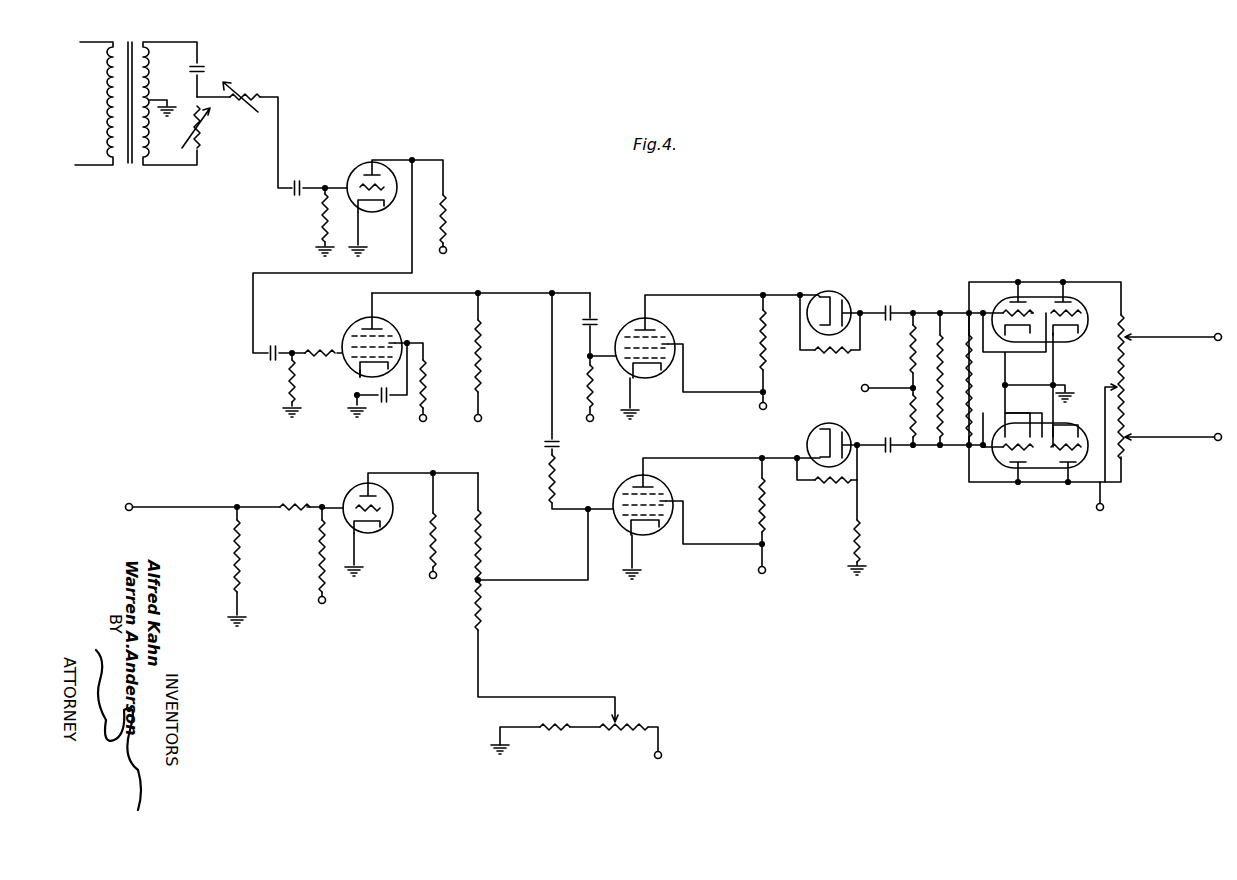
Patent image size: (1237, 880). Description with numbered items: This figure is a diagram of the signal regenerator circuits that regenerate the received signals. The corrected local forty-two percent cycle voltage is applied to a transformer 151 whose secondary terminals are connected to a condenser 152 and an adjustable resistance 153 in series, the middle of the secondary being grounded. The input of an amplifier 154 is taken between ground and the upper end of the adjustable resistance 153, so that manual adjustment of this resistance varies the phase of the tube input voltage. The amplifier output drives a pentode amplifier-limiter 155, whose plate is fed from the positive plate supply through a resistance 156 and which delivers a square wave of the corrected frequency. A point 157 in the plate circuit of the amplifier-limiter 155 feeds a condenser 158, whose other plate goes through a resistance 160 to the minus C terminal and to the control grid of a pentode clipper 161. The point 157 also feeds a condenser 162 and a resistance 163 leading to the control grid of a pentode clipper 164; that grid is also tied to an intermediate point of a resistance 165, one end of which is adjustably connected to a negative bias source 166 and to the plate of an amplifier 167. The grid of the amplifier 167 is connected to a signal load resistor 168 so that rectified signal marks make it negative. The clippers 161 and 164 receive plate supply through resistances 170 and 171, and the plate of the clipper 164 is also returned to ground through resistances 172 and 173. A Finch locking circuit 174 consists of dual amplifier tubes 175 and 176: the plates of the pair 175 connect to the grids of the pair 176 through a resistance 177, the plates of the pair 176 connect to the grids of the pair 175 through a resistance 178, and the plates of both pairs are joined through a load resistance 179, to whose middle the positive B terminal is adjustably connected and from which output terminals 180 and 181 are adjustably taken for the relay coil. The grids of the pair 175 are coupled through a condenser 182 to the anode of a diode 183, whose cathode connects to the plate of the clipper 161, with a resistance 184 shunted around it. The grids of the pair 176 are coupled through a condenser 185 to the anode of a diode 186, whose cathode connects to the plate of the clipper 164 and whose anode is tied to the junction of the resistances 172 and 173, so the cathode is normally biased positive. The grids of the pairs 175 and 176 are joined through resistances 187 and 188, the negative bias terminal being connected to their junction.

The transformer 151 is at (128, 167).
The condenser 152 is at (206, 74).
The adjustable resistance 153 is at (203, 134).
The amplifier 154 is at (355, 172).
The pentode amplifier-limiter 155 is at (351, 327).
The resistance 156 is at (486, 352).
The point 157 is at (481, 290).
The condenser 158 is at (586, 329).
The resistance 160 is at (596, 386).
The pentode clipper 161 is at (626, 326).
The condenser 162 is at (546, 446).
The resistance 163 is at (548, 481).
The pentode clipper 164 is at (622, 487).
The resistance 165 is at (484, 547).
The negative bias source 166 is at (577, 723).
The amplifier 167 is at (352, 492).
The signal load resistor 168 is at (242, 569).
The resistance 170 is at (757, 343).
The resistance 171 is at (766, 511).
The resistance 172 is at (826, 484).
The resistance 173 is at (851, 539).
The Finch locking circuit 174 is at (1043, 383).
The dual amplifier tubes 175 is at (1038, 294).
The dual amplifier tubes 176 is at (1041, 470).
The resistance 177 is at (968, 398).
The resistance 178 is at (942, 374).
The load resistance 179 is at (1127, 323).
The output terminal 180 is at (1165, 339).
The output terminal 181 is at (1161, 436).
The condenser 182 is at (888, 306).
The diode 183 is at (827, 292).
The resistance 184 is at (824, 357).
The condenser 185 is at (887, 437).
The diode 186 is at (826, 430).
The resistance 187 is at (910, 352).
The resistance 188 is at (920, 440).